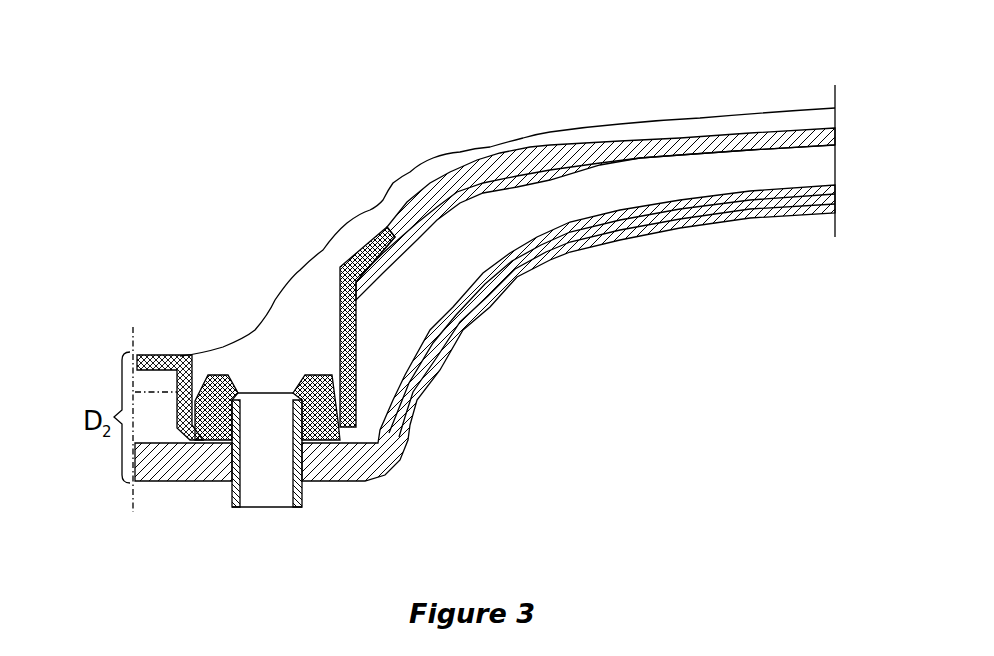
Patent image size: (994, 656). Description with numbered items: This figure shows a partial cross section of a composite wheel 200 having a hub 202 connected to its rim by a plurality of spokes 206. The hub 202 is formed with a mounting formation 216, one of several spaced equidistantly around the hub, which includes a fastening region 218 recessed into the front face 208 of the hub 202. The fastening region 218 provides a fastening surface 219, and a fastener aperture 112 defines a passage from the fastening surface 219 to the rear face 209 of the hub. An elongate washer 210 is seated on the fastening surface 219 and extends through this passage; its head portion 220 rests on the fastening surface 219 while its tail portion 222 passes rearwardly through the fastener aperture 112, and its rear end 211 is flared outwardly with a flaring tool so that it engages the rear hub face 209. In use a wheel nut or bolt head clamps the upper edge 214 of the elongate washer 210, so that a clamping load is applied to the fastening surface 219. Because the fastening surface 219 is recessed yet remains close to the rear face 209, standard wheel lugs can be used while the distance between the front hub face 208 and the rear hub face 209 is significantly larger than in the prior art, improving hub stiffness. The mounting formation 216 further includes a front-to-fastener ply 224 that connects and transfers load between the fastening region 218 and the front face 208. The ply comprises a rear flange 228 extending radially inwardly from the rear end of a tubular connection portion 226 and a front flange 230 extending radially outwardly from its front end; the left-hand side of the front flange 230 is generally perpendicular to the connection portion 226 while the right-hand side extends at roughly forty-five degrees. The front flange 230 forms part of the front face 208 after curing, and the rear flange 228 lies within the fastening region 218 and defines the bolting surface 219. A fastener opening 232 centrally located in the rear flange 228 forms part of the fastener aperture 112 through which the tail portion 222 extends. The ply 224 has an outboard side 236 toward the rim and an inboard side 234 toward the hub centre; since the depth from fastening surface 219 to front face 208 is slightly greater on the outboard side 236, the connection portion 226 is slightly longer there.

The composite wheel 200 is at (162, 119).
The hub 202 is at (124, 179).
The spokes 206 is at (772, 73).
The front face of the hub 208 is at (512, 103).
The rear face of the hub 209 is at (155, 496).
The elongate washer 210 is at (410, 410).
The rear end of the elongate washer 211 is at (297, 508).
The port opening 112 is at (266, 516).
The upper edge of the elongate washer 214 is at (219, 400).
The mounting formation 216 is at (265, 290).
The fastening region 218 is at (326, 344).
The fastening surface 219 is at (367, 377).
The head portion of the elongate washer 220 is at (215, 412).
The tail portion of the elongate washer 222 is at (322, 488).
The front-to-fastener ply 224 is at (317, 294).
The tubular connection portion 226 is at (338, 315).
The rear flange 228 is at (226, 445).
The front flange 230 is at (352, 245).
The fastener opening 232 is at (314, 440).
The inboard side 234 is at (162, 298).
The outboard side 236 is at (359, 153).